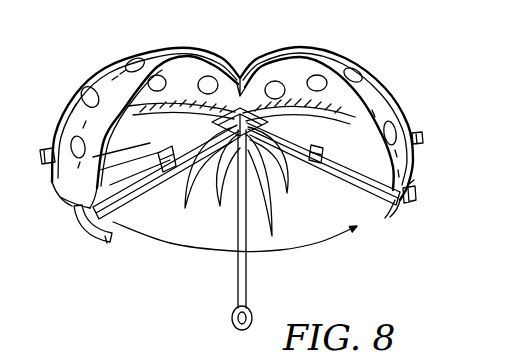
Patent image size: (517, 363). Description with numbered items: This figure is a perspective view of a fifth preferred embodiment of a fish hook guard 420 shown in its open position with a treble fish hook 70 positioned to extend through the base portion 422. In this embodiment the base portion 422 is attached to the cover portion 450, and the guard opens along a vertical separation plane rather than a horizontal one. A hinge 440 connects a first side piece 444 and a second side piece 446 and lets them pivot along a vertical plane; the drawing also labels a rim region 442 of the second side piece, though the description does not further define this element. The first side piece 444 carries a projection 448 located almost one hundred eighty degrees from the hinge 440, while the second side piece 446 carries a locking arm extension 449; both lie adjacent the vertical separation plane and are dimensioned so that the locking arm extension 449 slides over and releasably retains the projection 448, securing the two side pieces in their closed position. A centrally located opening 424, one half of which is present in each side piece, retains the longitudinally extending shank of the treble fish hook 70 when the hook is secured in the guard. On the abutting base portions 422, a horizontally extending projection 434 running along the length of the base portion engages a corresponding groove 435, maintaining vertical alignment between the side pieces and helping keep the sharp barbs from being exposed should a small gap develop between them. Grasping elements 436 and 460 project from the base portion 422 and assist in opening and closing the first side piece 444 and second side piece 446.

The treble fish hook 70 is at (229, 290).
The fish hook guard 420 is at (240, 72).
The base portion 422 is at (51, 199).
The centrally located opening 424 is at (162, 156).
The horizontally extending projection 434 is at (133, 207).
The groove 435 is at (347, 180).
The grasping element 436 is at (50, 148).
The hinge 440 is at (231, 124).
The right shell rim 442 is at (352, 85).
The first side piece 444 is at (98, 70).
The second side piece 446 is at (413, 117).
The projection 448 is at (405, 217).
The locking arm extension 449 is at (110, 243).
The cover portion 450 is at (68, 98).
The grasping element 460 is at (429, 148).